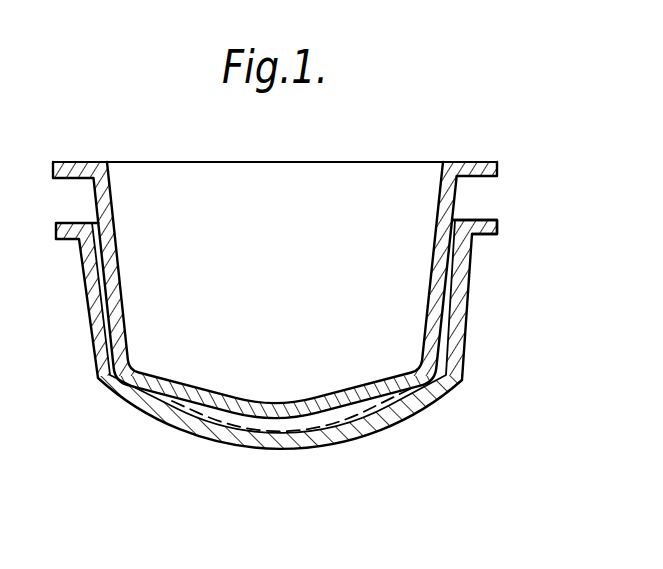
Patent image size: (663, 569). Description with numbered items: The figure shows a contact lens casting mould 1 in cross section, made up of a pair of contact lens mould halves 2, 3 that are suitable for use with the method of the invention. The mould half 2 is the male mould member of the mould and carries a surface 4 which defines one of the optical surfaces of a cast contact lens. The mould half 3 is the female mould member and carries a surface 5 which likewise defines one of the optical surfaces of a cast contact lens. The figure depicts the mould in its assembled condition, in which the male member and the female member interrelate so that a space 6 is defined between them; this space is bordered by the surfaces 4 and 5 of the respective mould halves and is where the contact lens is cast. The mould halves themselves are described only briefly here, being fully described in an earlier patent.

The mould 1 is at (363, 190).
The mould half 2 is at (468, 170).
The mould half 3 is at (487, 232).
The surface 4 is at (275, 428).
The surface 5 is at (337, 433).
The space 6 is at (181, 440).